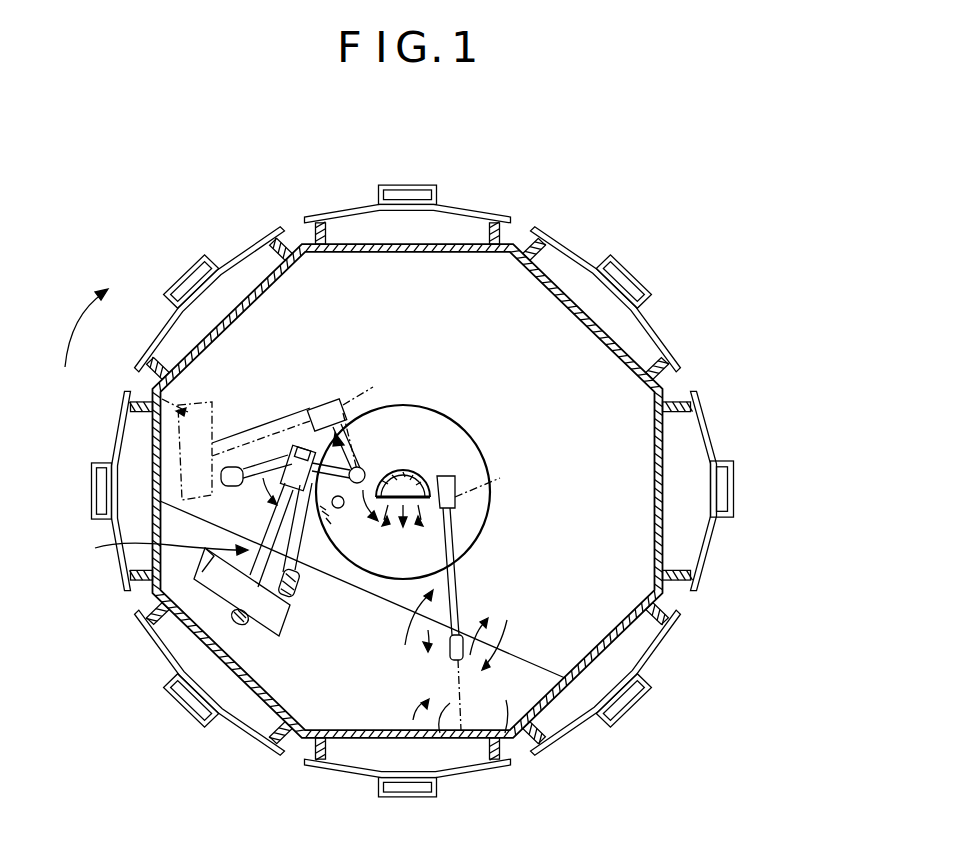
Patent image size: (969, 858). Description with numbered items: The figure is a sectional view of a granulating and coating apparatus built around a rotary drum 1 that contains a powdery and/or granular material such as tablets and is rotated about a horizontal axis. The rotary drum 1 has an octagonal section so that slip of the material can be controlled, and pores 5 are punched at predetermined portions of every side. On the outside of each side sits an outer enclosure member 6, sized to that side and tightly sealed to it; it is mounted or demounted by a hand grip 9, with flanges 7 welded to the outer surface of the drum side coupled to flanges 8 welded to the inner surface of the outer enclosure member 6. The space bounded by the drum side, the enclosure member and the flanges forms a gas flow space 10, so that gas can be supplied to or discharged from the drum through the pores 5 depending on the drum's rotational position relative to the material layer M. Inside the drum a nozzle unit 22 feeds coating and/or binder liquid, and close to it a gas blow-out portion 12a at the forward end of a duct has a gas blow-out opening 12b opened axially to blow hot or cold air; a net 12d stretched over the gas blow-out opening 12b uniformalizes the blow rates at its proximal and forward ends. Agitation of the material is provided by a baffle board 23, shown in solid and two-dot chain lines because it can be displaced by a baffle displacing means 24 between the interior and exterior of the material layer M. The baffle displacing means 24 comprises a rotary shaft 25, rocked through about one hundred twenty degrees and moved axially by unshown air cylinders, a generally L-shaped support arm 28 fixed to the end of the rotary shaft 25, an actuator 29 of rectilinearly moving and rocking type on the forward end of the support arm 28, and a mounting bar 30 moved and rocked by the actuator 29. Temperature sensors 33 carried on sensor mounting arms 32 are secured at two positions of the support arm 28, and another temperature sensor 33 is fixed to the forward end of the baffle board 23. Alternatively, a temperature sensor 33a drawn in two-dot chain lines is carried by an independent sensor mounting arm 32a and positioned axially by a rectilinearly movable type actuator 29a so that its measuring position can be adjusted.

The rotary drum 1 is at (408, 491).
The pores 5 is at (609, 295).
The outer enclosure member 6 is at (704, 490).
The flange 7 is at (596, 309).
The flange 8 is at (678, 491).
The hand grip 9 is at (722, 489).
The gas flow space 10 is at (698, 490).
The gas blow-out portion 12a is at (410, 470).
The gas blow-out opening 12b is at (430, 486).
The net 12d is at (406, 505).
The nozzle unit 22 is at (338, 510).
The baffle board 23 is at (122, 490).
The baffle displacing means 24 is at (154, 549).
The rotary shaft 25 is at (410, 414).
The support arm 28 is at (358, 410).
The actuator 29 is at (312, 482).
The rectilinearly movable type actuator 29a is at (470, 490).
The mounting bar 30 is at (253, 440).
The sensor mounting arm 32 is at (298, 575).
The sensor mounting arm 32a is at (462, 546).
The temperature sensor 33 is at (222, 476).
The temperature sensor 33a is at (474, 722).
The powdery and/or granular material layer M is at (517, 738).